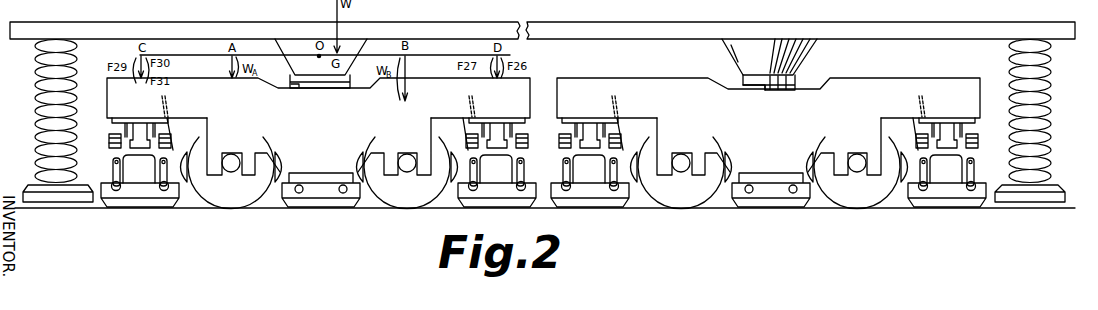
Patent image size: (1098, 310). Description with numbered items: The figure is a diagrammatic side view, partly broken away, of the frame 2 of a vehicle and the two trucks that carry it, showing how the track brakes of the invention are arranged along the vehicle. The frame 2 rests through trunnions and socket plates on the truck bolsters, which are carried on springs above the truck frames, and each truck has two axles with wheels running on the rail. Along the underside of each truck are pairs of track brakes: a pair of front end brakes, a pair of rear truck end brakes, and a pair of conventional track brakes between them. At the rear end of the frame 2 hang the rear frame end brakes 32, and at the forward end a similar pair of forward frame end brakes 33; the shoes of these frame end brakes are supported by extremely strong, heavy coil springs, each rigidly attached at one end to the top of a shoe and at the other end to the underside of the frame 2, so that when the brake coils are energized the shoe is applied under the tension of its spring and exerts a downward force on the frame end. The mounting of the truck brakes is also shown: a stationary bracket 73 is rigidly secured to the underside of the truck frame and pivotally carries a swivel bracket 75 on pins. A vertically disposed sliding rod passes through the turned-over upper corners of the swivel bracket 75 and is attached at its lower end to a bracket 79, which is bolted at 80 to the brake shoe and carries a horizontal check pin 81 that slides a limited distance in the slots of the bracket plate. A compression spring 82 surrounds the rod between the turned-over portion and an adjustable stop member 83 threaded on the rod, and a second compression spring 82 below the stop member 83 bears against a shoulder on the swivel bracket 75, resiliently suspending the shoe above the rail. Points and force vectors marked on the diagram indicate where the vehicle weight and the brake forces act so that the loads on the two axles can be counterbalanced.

The frame 2 is at (868, 27).
The rear frame end brake 32 is at (57, 196).
The forward frame end brake 33 is at (1037, 201).
The stationary bracket 73 is at (141, 118).
The swivel bracket 75 is at (139, 169).
The bracket 79 is at (112, 177).
The bolt 80 is at (159, 186).
The check pin 81 is at (112, 160).
The compression spring 82 is at (108, 136).
The adjustable stop member 83 is at (109, 143).